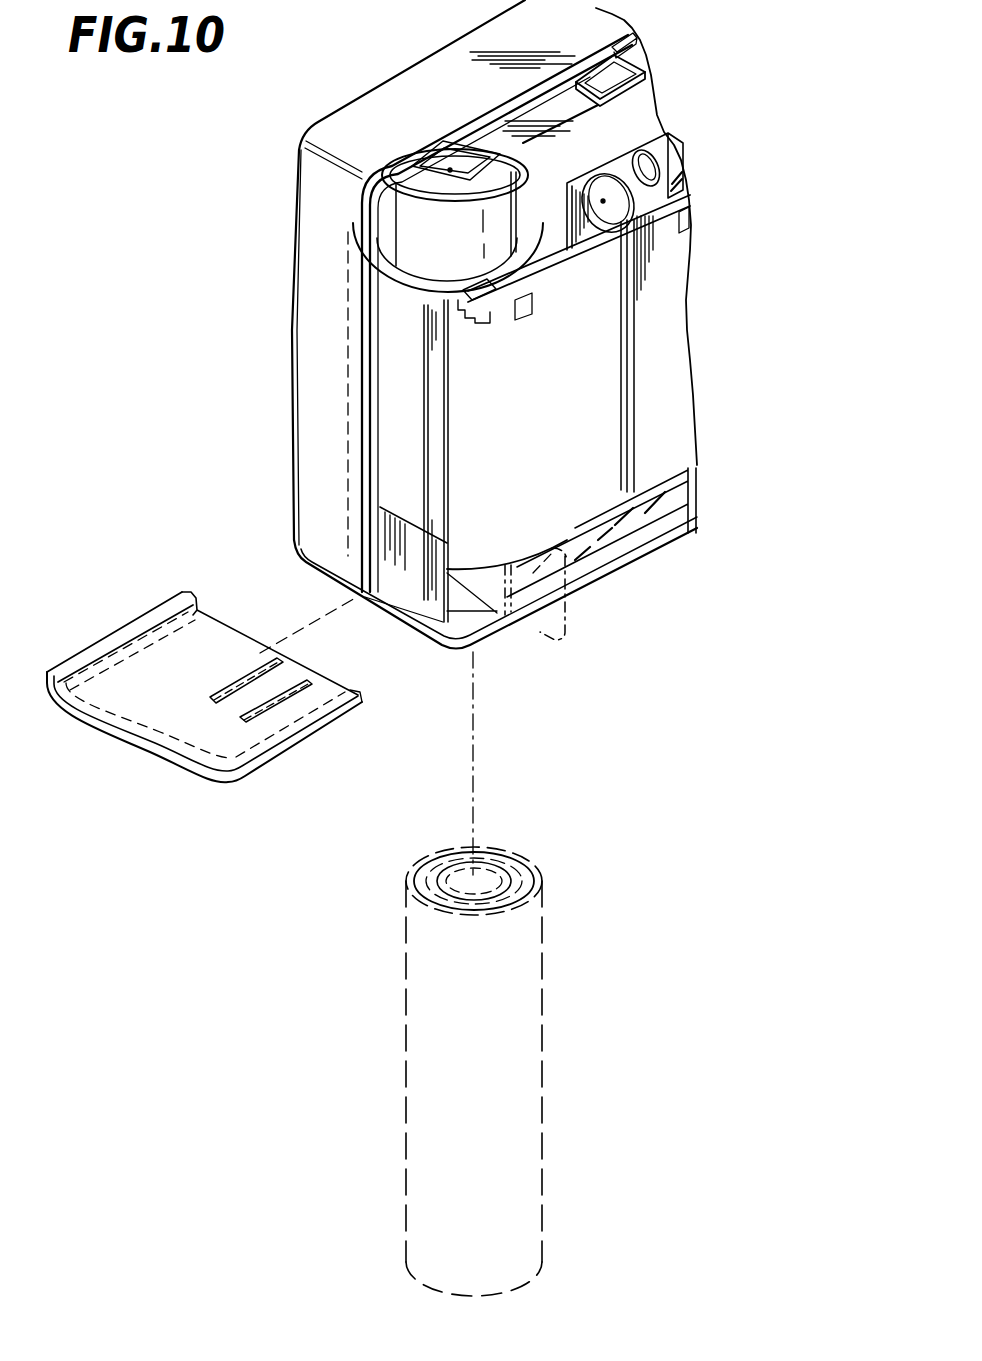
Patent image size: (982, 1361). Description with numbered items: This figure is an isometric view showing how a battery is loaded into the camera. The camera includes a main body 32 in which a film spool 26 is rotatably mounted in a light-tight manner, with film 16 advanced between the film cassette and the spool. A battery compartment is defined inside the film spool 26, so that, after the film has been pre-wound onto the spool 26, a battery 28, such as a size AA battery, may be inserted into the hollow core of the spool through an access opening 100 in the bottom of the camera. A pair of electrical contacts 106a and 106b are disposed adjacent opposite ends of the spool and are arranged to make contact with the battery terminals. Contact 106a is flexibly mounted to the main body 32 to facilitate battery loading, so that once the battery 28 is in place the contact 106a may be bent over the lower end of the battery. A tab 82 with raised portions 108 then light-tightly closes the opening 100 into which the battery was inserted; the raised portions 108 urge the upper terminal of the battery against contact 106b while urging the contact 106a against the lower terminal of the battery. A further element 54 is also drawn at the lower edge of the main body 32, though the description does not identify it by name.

The film 16 is at (663, 312).
The main body 32 is at (434, 68).
The electrical contact 106b is at (497, 121).
The battery 28 is at (407, 238).
The film spool 26 is at (470, 280).
The access opening 100 is at (487, 590).
The bottom rail 54 is at (478, 642).
The electrical contact 106a is at (568, 613).
The raised portions 108 is at (298, 682).
The tab 82 is at (140, 616).